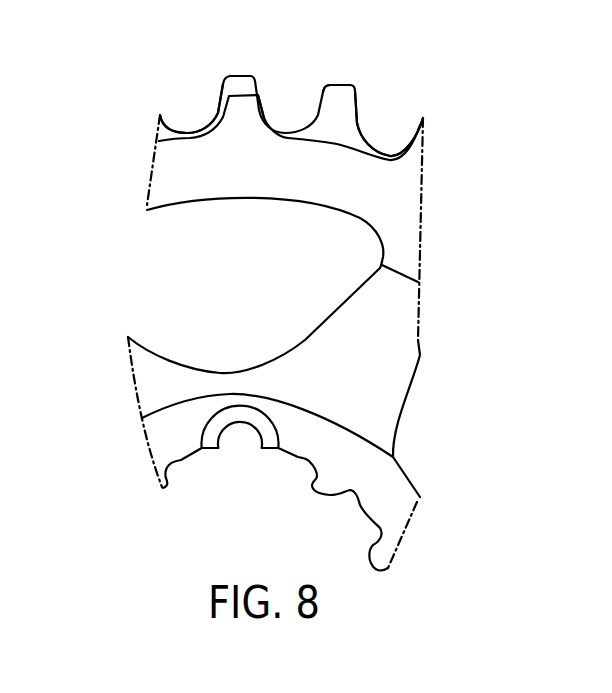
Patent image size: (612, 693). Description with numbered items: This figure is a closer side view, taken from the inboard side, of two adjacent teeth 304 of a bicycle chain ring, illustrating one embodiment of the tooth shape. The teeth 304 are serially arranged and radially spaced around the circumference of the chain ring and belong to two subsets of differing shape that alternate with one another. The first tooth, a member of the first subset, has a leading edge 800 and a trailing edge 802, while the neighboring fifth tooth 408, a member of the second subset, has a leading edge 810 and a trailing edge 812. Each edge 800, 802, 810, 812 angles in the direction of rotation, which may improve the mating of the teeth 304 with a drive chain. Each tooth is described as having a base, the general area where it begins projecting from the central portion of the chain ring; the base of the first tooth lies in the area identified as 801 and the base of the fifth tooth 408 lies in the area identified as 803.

The teeth 304 is at (210, 52).
The fifth tooth 408 is at (248, 77).
The trailing edge 812 is at (258, 93).
The leading edge 810 is at (221, 91).
The base area of first tooth 801 is at (206, 116).
The leading edge 800 is at (324, 86).
The trailing edge 802 is at (358, 104).
The base area of fifth tooth 803 is at (364, 126).